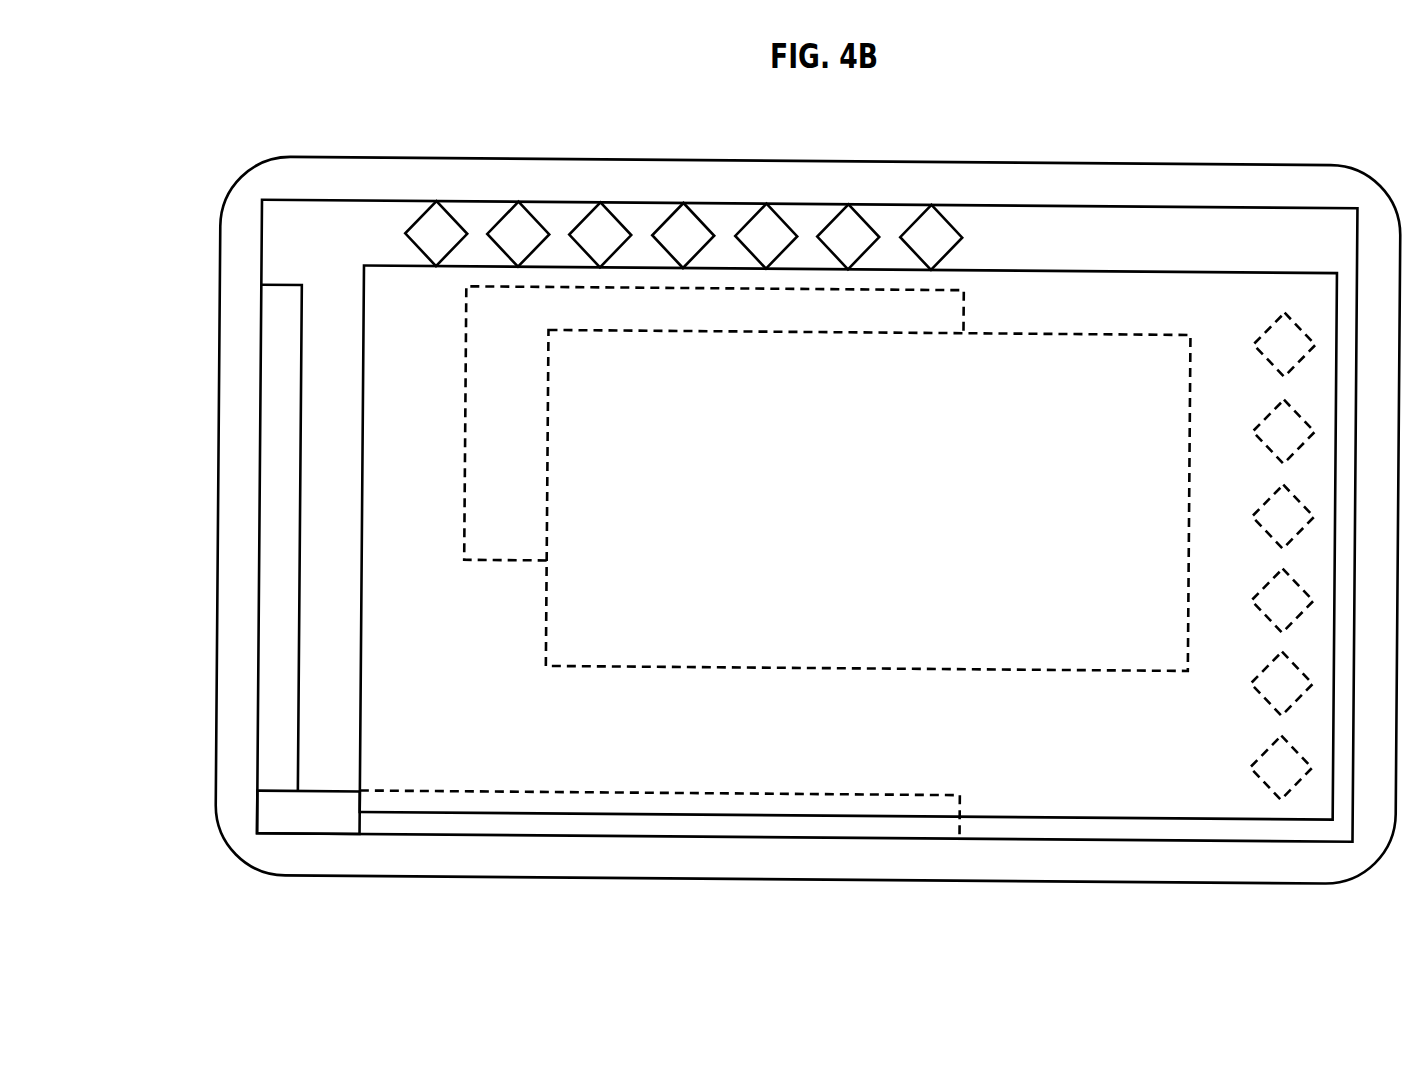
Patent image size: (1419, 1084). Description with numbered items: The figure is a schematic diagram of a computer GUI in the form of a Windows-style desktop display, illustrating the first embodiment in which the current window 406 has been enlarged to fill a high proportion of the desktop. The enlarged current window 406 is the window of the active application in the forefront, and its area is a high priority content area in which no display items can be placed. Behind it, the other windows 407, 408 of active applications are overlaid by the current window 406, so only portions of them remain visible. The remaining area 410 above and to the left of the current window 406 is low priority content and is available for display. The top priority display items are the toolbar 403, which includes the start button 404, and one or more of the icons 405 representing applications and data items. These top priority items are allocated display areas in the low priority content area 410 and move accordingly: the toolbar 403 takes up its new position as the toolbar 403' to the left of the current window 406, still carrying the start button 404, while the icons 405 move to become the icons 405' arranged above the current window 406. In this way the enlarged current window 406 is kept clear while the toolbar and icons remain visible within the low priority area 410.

The toolbar 403 is at (735, 548).
The toolbar in new position 403' is at (188, 535).
The start button 404 is at (257, 812).
The icons 405 is at (1264, 445).
The icons in new position 405' is at (683, 179).
The current window 406 is at (362, 515).
The window 407 is at (1088, 333).
The window 408 is at (963, 289).
The remaining area 410 is at (323, 242).